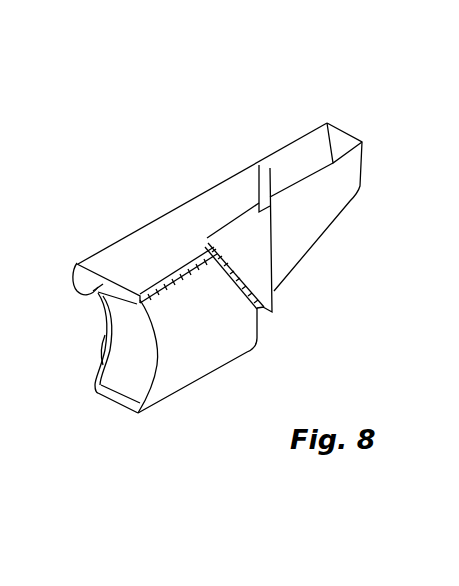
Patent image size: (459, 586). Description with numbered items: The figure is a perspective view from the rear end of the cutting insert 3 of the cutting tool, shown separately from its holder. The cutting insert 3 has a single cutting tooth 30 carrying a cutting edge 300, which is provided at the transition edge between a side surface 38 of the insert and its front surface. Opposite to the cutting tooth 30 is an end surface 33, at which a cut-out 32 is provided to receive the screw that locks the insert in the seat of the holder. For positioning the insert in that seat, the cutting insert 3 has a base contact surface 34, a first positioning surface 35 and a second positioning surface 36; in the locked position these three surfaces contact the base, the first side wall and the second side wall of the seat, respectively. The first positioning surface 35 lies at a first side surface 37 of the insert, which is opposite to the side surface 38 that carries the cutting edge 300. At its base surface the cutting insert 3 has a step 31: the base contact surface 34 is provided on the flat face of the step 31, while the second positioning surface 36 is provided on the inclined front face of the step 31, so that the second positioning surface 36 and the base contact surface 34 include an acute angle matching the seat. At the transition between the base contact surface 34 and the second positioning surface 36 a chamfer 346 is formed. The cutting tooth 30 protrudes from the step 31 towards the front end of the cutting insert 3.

The cutting insert 3 is at (160, 140).
The cutting tooth 30 is at (297, 112).
The cutting edge 300 is at (352, 147).
The side surface 38 is at (224, 200).
The second positioning surface 36 is at (208, 245).
The end surface 33 is at (77, 262).
The base contact surface 34 is at (188, 352).
The chamfer 346 is at (253, 292).
The step 31 is at (277, 321).
The first positioning surface 35 is at (232, 358).
The first side surface 37 is at (182, 428).
The cut-out 32 is at (88, 400).